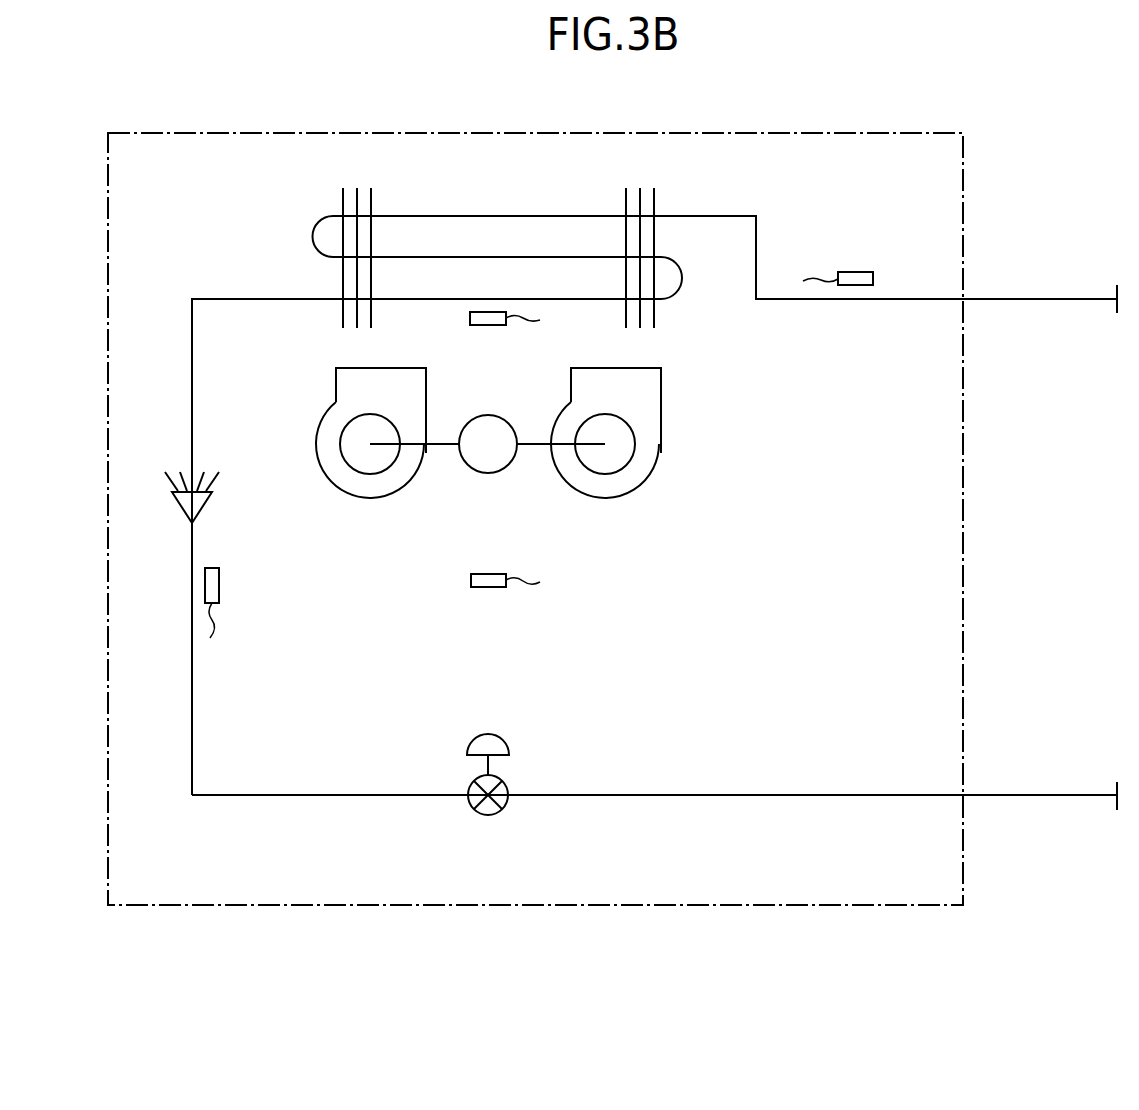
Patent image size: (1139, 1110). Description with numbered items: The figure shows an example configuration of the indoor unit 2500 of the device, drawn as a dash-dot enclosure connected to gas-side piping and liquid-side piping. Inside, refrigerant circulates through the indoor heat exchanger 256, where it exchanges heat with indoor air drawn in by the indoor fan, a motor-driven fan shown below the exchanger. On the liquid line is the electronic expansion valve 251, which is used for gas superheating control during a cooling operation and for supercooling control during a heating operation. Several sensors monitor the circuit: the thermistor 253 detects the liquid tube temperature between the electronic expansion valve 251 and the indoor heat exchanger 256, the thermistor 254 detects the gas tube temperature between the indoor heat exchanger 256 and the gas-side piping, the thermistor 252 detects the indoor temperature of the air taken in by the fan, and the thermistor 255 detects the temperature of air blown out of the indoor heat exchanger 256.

The indoor unit 2500 is at (860, 133).
The electronic expansion valve 251 is at (506, 782).
The thermistor 252 is at (487, 587).
The thermistor 253 is at (219, 585).
The thermistor 254 is at (856, 272).
The thermistor 255 is at (470, 318).
The indoor heat exchanger 256 is at (655, 317).